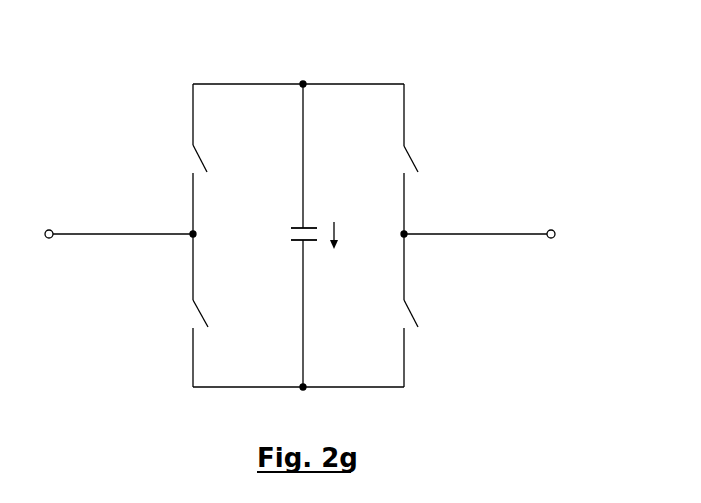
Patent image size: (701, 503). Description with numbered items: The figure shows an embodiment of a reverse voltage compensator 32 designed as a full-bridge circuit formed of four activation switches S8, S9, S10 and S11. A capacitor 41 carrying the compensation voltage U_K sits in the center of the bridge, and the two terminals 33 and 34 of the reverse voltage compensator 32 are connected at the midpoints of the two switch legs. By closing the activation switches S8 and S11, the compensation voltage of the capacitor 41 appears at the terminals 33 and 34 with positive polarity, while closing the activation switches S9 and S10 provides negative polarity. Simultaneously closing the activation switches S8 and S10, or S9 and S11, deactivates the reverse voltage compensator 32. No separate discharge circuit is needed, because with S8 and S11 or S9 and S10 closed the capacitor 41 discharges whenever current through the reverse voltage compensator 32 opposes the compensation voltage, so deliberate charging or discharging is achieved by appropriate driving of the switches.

The reverse voltage compensator 32 is at (443, 53).
The terminal 33 is at (48, 229).
The terminal 34 is at (551, 229).
The capacitor 41 is at (290, 240).
The activation switch S8 is at (184, 159).
The activation switch S9 is at (184, 310).
The activation switch S10 is at (387, 159).
The activation switch S11 is at (387, 310).